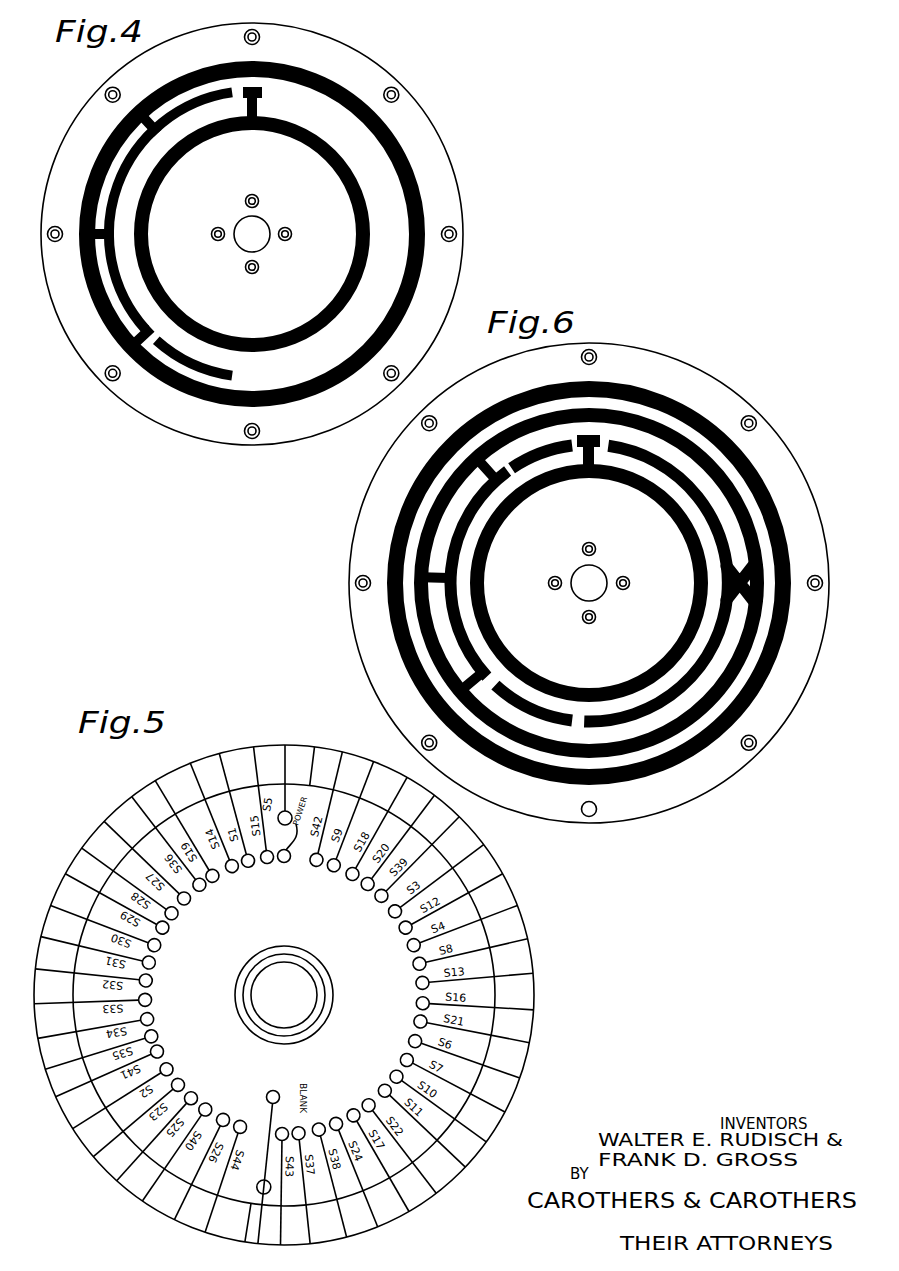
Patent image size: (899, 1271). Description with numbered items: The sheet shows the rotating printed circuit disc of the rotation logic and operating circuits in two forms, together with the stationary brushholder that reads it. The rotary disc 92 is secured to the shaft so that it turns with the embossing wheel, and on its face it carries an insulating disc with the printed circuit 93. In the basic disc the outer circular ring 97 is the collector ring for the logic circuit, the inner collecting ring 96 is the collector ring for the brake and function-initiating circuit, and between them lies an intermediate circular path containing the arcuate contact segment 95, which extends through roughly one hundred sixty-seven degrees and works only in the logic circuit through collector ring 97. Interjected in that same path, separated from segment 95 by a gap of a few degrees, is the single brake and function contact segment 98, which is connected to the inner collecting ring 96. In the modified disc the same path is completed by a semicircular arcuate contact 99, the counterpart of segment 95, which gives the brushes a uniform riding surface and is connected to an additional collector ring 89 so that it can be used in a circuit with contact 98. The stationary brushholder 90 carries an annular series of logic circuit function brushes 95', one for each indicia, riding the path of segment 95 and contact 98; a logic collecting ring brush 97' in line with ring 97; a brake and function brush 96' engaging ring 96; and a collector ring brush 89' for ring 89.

In FIG. 6, the collector ring 89 is at (574, 583).
In FIG. 5, the stationary brushholder 90 is at (532, 968).
In FIG. 4, the rotary disc 92 is at (172, 430).
In FIG. 6, the rotary disc 92 is at (358, 628).
In FIG. 4, the printed circuit 93 is at (452, 186).
In FIG. 6, the printed circuit 93 is at (788, 466).
In FIG. 4, the arcuate contact segment 95 is at (184, 243).
In FIG. 6, the arcuate contact segment 95 is at (575, 584).
In FIG. 4, the inner collecting ring 96 is at (252, 234).
In FIG. 6, the inner collecting ring 96 is at (589, 583).
In FIG. 4, the outer circular ring 97 is at (273, 234).
In FIG. 6, the outer circular ring 97 is at (638, 583).
In FIG. 4, the brake and function contact segment 98 is at (256, 87).
In FIG. 6, the brake and function contact segment 98 is at (600, 433).
In FIG. 6, the semicircular arcuate contact 99 is at (700, 507).
In FIG. 5, the collector ring brush 89' is at (222, 1219).
In FIG. 5, the logic circuit function brushes 95' is at (188, 998).
In FIG. 5, the brake and function brush 96' is at (276, 1147).
In FIG. 5, the logic collecting ring brush 97' is at (288, 860).